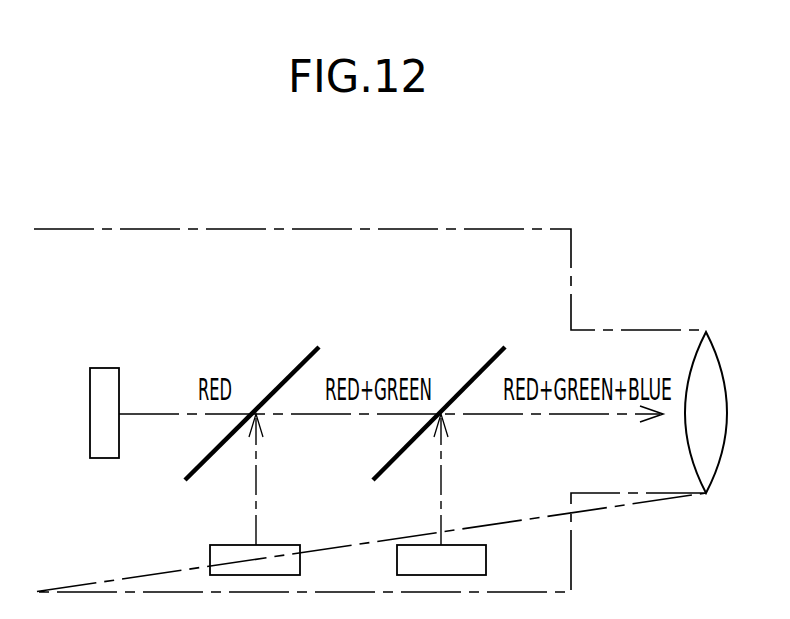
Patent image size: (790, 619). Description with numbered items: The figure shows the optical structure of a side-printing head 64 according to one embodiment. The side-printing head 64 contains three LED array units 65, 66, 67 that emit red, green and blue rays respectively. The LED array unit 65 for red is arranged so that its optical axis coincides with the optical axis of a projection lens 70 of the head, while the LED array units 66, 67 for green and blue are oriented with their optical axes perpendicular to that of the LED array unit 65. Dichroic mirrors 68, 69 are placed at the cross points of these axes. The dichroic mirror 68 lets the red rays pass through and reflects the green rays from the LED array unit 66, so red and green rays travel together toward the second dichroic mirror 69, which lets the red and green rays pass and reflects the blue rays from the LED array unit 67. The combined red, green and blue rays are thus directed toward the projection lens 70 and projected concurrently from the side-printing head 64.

The side-printing head 64 is at (175, 229).
The LED array unit for red 65 is at (93, 458).
The LED array unit for green 66 is at (210, 562).
The LED array unit for blue 67 is at (475, 545).
The dichroic mirror 68 is at (300, 361).
The second dichroic mirror 69 is at (487, 361).
The projection lens 70 is at (704, 465).